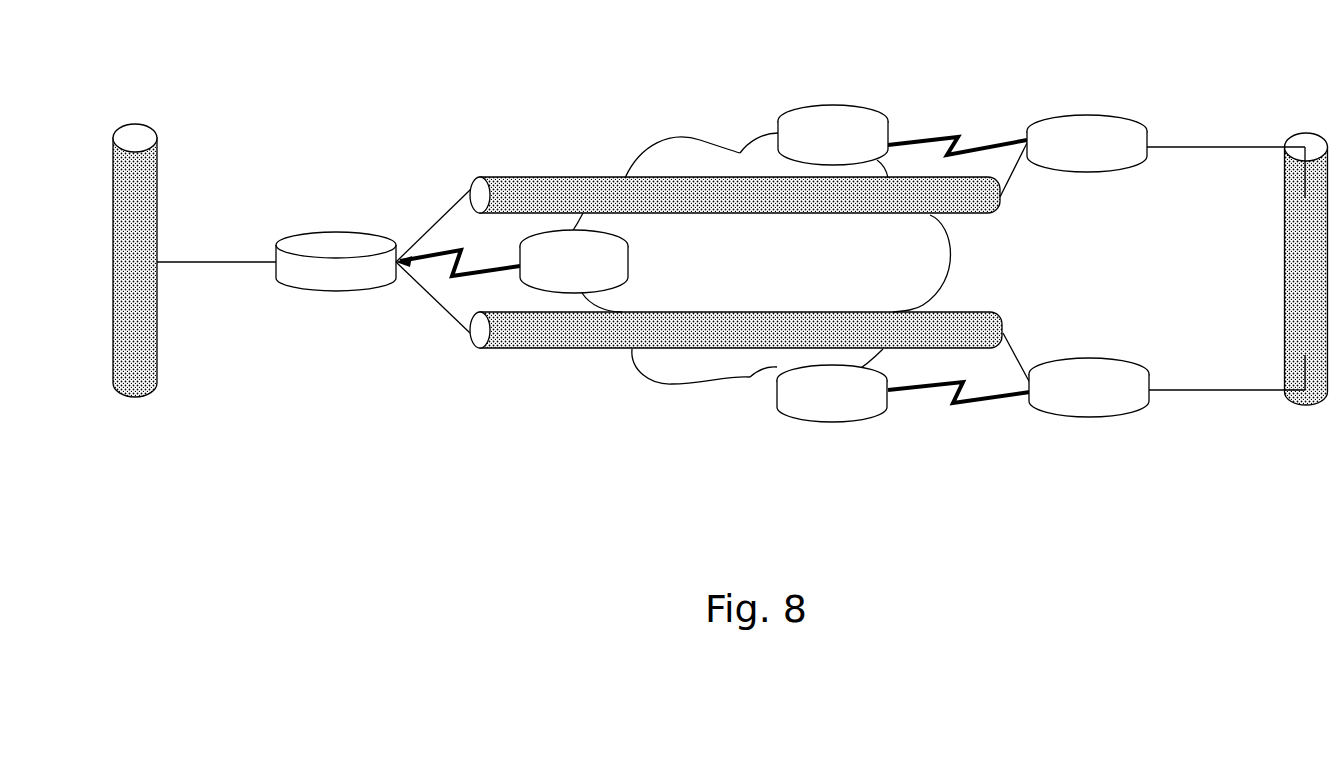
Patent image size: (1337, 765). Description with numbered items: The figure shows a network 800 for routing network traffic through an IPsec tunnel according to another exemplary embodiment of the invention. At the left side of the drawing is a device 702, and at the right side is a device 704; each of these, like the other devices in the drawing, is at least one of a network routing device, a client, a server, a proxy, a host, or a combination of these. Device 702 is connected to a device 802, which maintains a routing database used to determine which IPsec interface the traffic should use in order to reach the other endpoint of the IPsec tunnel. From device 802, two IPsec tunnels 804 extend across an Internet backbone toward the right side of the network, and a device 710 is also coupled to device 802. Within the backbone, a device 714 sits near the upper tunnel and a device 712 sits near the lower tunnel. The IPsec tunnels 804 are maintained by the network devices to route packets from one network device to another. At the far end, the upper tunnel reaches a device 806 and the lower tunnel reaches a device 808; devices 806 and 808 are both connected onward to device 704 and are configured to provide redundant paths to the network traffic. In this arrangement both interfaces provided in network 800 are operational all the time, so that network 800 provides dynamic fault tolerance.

The network 800 is at (293, 512).
The device 702 is at (133, 397).
The device 704 is at (1306, 405).
The device 710 is at (630, 259).
The device 712 is at (833, 422).
The device 714 is at (833, 105).
The device 802 is at (335, 291).
The IPsec tunnels 804 is at (735, 177).
The device 806 is at (1087, 115).
The device 808 is at (1088, 417).